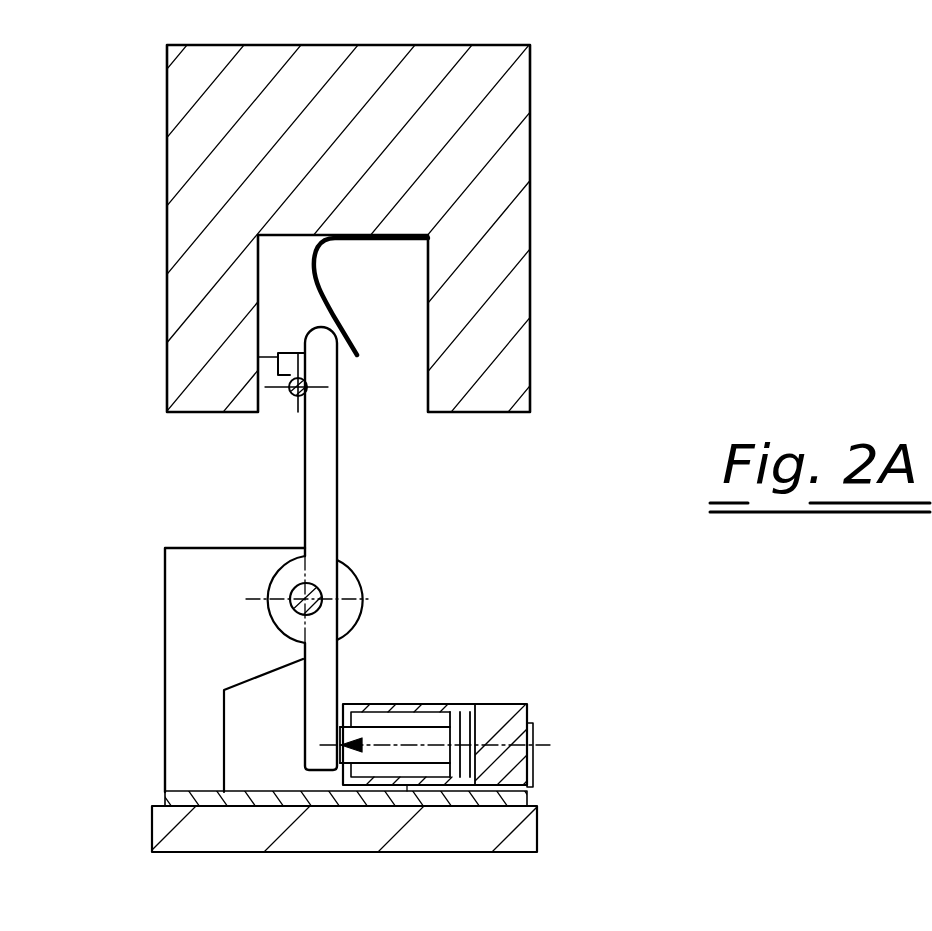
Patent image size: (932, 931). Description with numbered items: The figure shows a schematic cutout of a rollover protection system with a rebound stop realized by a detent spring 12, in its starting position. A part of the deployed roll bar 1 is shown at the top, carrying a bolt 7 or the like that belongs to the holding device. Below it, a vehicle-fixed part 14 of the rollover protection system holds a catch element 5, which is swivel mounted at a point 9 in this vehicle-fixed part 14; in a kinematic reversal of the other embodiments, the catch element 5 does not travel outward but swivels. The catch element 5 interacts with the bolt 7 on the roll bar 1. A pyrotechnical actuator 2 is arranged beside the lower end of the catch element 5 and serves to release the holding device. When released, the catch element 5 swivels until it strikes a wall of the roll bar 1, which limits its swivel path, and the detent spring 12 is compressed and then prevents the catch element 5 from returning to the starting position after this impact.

The roll bar 1 is at (513, 179).
The spring 12 is at (333, 308).
The vehicle-fixed part 14 is at (173, 690).
The swivel point 9 is at (318, 593).
The catch element 5 is at (330, 478).
The bolt 7 is at (292, 397).
The pyrotechnical actuator 2 is at (445, 703).